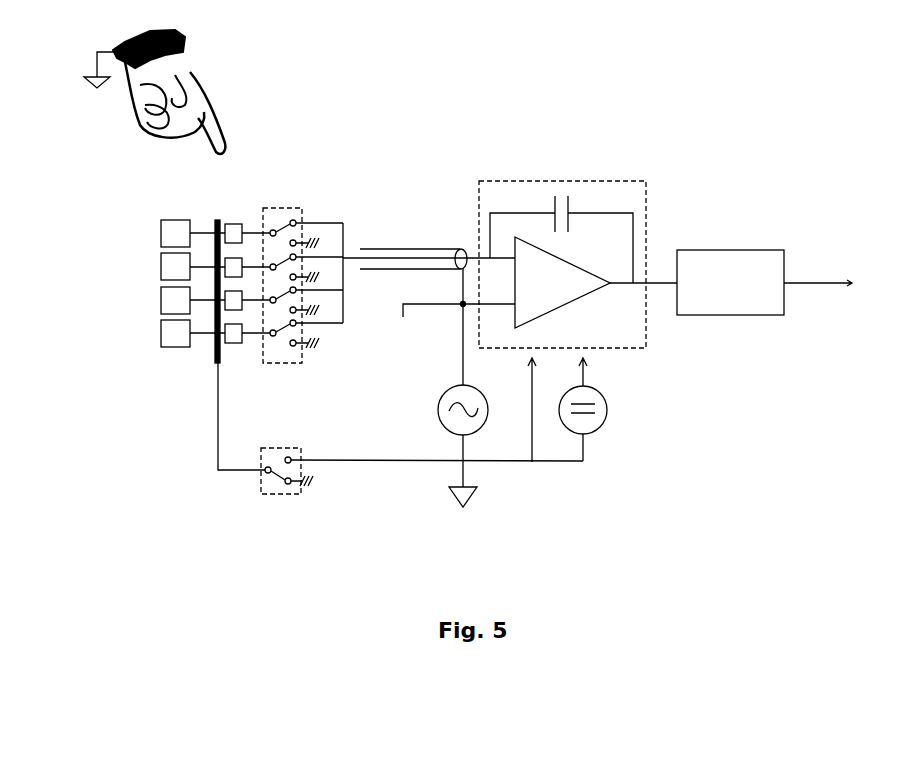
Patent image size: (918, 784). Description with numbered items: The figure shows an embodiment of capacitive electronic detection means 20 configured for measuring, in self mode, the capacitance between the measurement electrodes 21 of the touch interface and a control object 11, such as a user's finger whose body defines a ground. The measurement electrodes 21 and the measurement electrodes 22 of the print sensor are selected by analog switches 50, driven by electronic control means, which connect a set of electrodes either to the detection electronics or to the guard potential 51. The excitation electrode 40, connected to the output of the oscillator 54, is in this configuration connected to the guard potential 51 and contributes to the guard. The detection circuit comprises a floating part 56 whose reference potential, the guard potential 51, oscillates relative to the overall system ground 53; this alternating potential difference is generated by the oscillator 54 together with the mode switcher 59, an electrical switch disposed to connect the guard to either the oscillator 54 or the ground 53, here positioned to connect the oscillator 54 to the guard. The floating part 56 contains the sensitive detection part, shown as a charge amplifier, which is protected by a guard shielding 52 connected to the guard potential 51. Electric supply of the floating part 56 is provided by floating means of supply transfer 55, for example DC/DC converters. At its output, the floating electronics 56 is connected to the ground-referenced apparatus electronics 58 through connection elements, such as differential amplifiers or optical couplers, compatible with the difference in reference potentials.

The control object 11 is at (200, 68).
The capacitive electronic detection means 20 is at (538, 173).
The measurement electrodes 21 is at (172, 347).
The measurement electrode 22 is at (232, 344).
The excitation electrode 40 is at (217, 220).
The analog switches 50 is at (285, 208).
The guard potential 51 is at (403, 318).
The guard shielding 52 is at (410, 249).
The ground 53 is at (90, 80).
The oscillator 54 is at (438, 410).
The floating means of supply transfer 55 is at (607, 412).
The floating part 56 is at (613, 181).
The apparatus electronics 58 is at (733, 250).
The mode switcher 59 is at (278, 495).